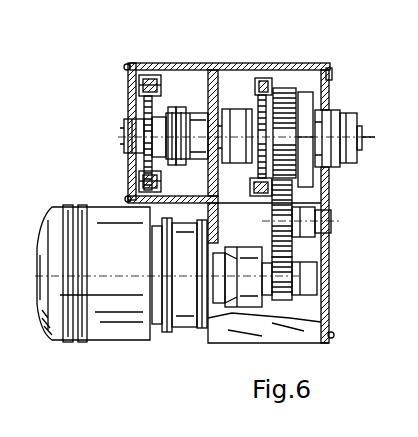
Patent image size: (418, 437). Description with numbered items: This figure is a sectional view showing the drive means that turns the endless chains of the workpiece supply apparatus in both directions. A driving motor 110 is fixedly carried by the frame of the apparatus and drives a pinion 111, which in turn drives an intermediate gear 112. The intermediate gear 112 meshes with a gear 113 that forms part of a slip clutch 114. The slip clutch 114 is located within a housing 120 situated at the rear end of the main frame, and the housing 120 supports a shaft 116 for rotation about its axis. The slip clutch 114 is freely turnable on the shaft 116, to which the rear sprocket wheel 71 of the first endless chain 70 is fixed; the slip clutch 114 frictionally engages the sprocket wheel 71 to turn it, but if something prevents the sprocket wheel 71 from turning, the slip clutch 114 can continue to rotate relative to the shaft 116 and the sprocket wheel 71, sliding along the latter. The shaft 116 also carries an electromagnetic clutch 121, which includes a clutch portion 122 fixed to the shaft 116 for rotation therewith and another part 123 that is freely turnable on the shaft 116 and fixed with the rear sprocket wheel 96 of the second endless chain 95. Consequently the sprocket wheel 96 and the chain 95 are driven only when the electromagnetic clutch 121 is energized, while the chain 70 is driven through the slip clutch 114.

The endless chain 70 is at (252, 187).
The rear sprocket wheel 71 is at (258, 105).
The second endless chain 95 is at (166, 78).
The rear sprocket wheel 96 is at (144, 106).
The driving motor 110 is at (108, 327).
The pinion 111 is at (283, 300).
The intermediate gear 112 is at (272, 234).
The gear 113 is at (283, 88).
The slip clutch 114 is at (334, 165).
The shaft 116 is at (364, 138).
The housing 120 is at (328, 94).
The electromagnetic clutch 121 is at (202, 113).
The clutch portion 122 is at (178, 165).
The other part of the clutch 123 is at (161, 183).